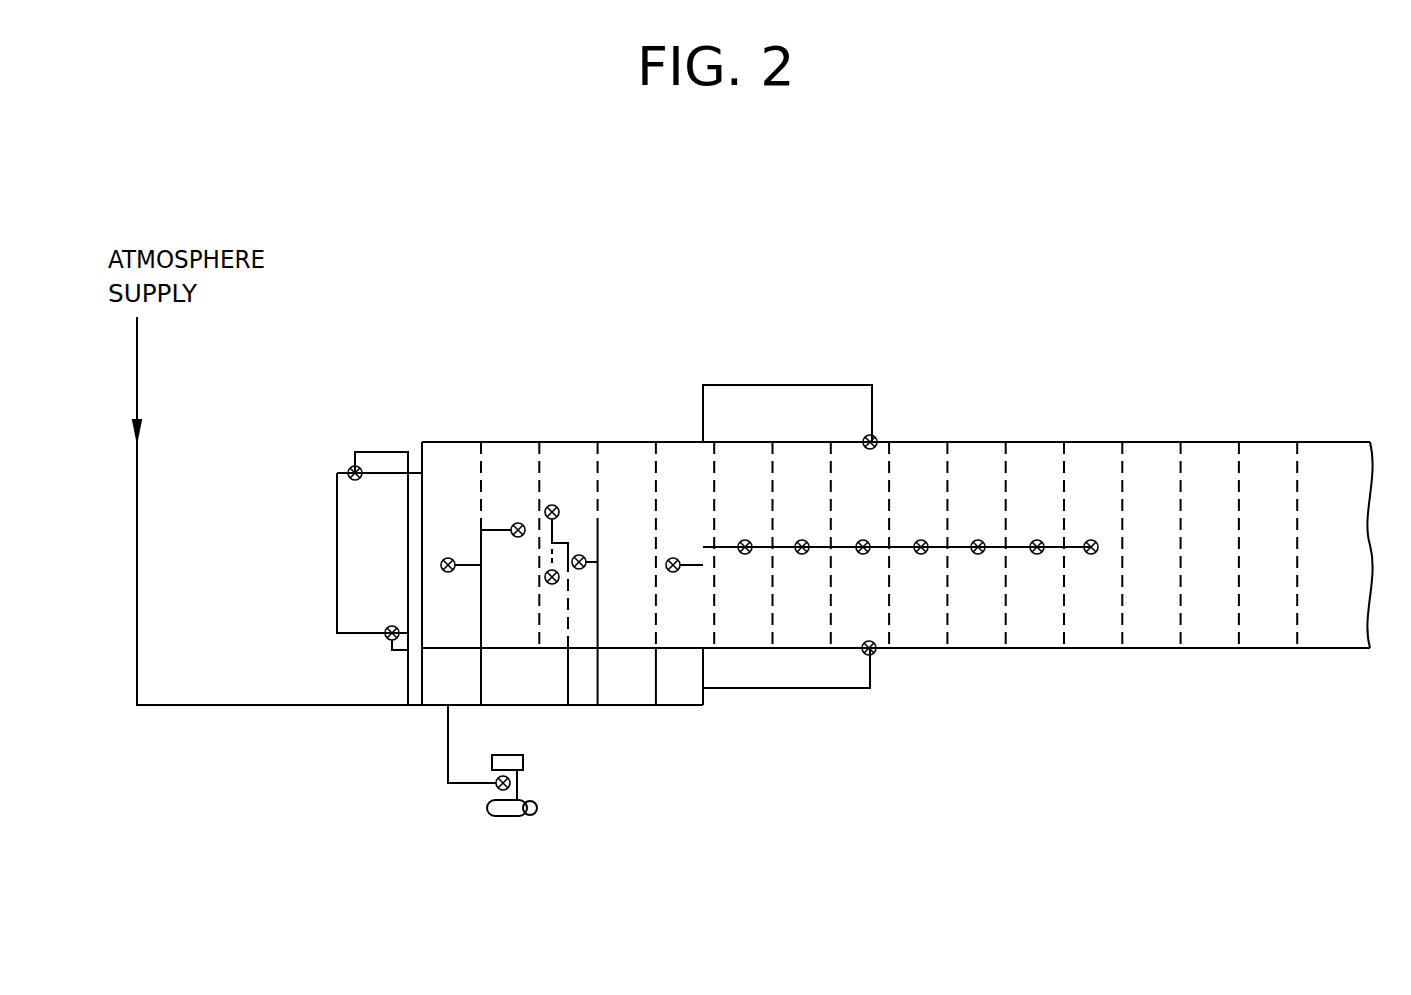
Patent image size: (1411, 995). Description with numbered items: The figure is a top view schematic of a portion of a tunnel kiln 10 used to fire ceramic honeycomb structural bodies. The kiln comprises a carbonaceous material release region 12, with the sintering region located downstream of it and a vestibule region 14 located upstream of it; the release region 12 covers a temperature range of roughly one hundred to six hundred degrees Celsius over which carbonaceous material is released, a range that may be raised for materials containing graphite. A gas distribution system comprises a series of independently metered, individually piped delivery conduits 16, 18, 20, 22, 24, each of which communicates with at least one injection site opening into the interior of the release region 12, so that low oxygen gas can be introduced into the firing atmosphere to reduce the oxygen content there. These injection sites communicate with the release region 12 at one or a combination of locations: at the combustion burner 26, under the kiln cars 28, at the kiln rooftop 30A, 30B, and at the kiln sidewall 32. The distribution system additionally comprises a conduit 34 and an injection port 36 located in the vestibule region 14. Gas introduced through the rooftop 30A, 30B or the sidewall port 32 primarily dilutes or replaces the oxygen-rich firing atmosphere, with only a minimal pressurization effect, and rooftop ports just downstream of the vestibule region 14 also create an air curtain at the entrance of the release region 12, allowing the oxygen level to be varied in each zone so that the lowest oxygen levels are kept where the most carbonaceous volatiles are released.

The tunnel kiln 10 is at (767, 340).
The carbonaceous material release region 12 is at (518, 523).
The vestibule region 14 is at (377, 487).
The delivery conduit 16 is at (448, 772).
The delivery conduit 18 is at (568, 677).
The delivery conduit 20 is at (482, 608).
The delivery conduit 22 is at (723, 615).
The delivery conduit 24 is at (808, 384).
The combustion burner 26 is at (520, 773).
The kiln cars 28 is at (555, 510).
The kiln rooftop 30A is at (510, 480).
The kiln rooftop 30B is at (868, 553).
The kiln sidewall 32 is at (875, 437).
The conduit 34 is at (422, 688).
The injection port 36 is at (390, 627).